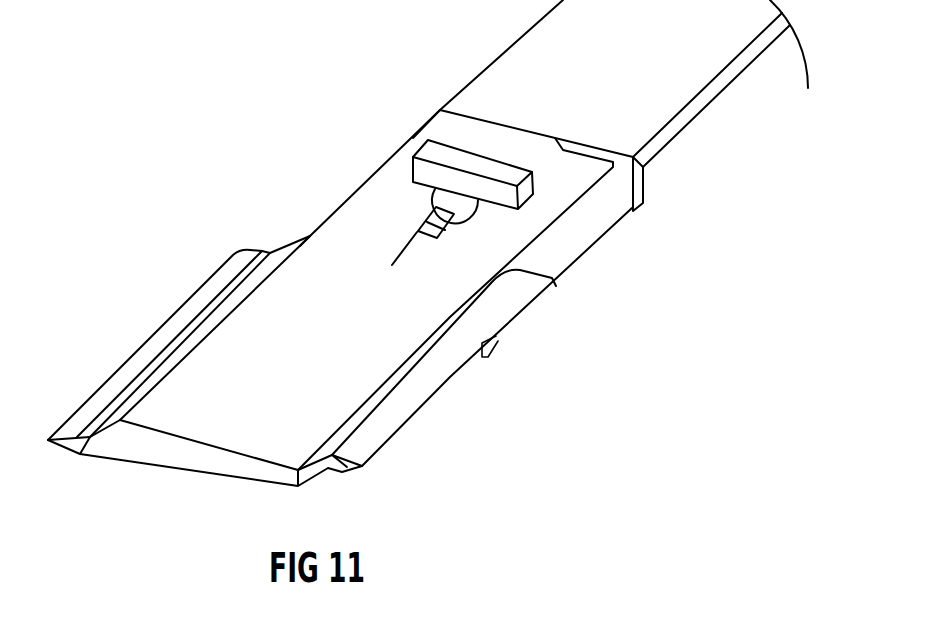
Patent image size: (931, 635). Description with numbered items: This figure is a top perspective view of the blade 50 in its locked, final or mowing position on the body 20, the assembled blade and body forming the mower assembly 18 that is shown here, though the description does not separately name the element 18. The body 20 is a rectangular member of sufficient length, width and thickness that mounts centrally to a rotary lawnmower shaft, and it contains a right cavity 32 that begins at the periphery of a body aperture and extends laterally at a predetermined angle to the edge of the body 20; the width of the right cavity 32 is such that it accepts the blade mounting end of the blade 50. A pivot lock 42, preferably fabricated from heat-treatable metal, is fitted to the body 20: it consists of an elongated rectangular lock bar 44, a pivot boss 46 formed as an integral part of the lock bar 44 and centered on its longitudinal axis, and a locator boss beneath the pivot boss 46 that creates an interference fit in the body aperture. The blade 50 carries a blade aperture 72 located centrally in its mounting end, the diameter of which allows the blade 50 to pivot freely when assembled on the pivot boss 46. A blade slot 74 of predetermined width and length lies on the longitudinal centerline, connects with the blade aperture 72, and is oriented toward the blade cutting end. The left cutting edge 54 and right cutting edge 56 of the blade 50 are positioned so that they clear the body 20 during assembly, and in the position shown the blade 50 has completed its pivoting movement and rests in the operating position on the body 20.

The tube 18 is at (687, 132).
The body 20 is at (682, 43).
The right cavity 32 is at (583, 262).
The pivot lock 42 is at (416, 140).
The lock bar 44 is at (435, 169).
The pivot boss 46 is at (465, 203).
The blade 50 is at (232, 450).
The left cutting edge 54 is at (160, 332).
The right cutting edge 56 is at (423, 410).
The blade aperture 72 is at (465, 203).
The blade slot 74 is at (392, 265).